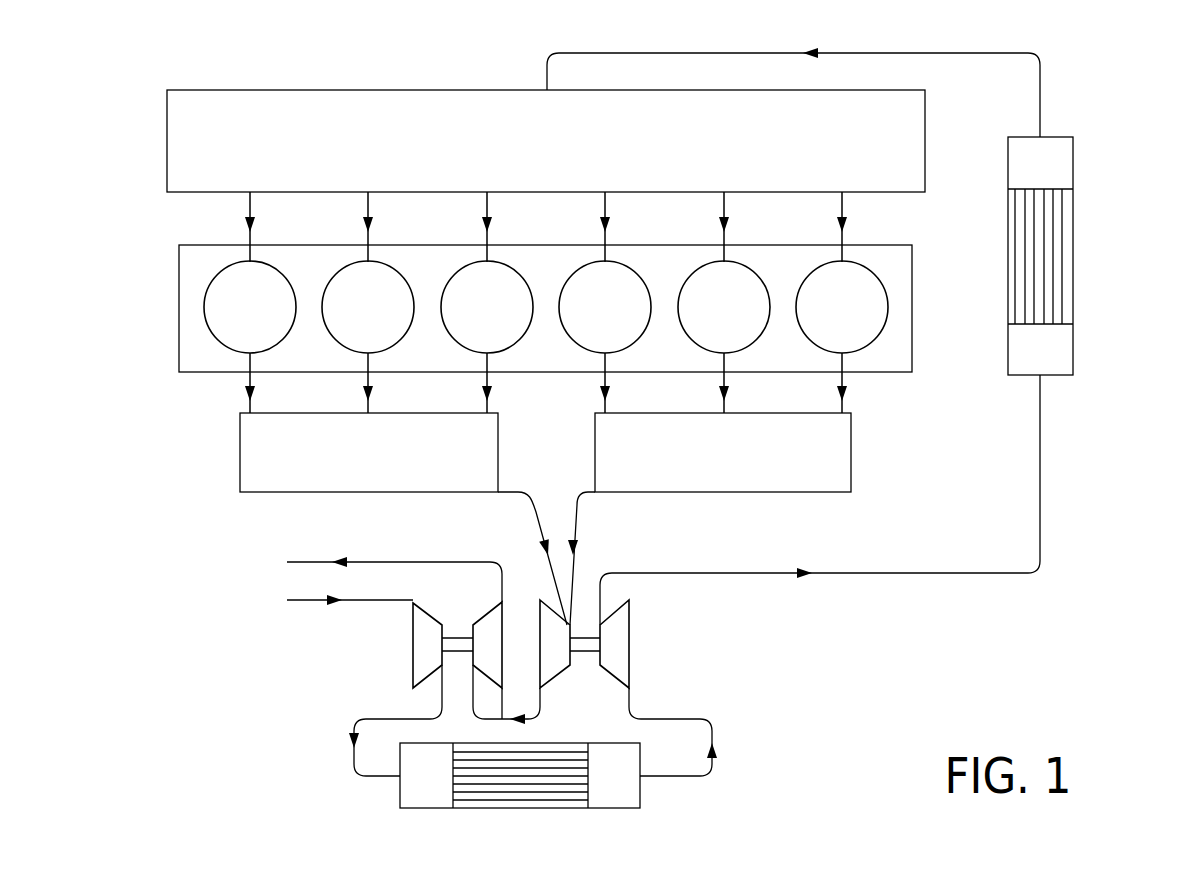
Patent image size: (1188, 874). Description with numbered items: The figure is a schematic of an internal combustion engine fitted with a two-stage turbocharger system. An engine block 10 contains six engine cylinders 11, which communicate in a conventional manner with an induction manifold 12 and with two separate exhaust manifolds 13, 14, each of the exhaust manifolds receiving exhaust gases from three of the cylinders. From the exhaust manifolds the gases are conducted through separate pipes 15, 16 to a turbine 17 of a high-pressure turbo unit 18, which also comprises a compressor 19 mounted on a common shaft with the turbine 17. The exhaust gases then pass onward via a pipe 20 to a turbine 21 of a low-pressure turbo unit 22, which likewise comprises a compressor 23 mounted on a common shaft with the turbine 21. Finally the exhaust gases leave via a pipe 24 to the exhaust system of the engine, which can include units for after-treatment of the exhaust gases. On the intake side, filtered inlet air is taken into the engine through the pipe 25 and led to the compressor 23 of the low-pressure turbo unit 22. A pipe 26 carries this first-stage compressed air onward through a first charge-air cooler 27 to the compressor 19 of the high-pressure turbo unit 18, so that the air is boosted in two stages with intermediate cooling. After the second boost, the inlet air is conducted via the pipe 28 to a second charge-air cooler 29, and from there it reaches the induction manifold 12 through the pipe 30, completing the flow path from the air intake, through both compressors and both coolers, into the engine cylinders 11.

The engine block 10 is at (179, 308).
The engine cylinders 11 is at (239, 320).
The induction manifold 12 is at (167, 145).
The exhaust manifold 13 is at (240, 450).
The exhaust manifold 14 is at (851, 450).
The pipe 15 is at (520, 492).
The pipe 16 is at (577, 485).
The turbine 17 is at (553, 608).
The high-pressure turbo unit 18 is at (670, 655).
The compressor 19 is at (629, 633).
The pipe 20 is at (544, 710).
The turbine 21 is at (493, 610).
The low-pressure turbo unit 22 is at (370, 654).
The compressor 23 is at (413, 633).
The pipe 24 is at (378, 560).
The pipe 25 is at (300, 600).
The pipe 26 is at (362, 719).
The first charge-air cooler 27 is at (400, 798).
The pipe 28 is at (870, 573).
The second charge-air cooler 29 is at (1073, 158).
The pipe 30 is at (1045, 68).